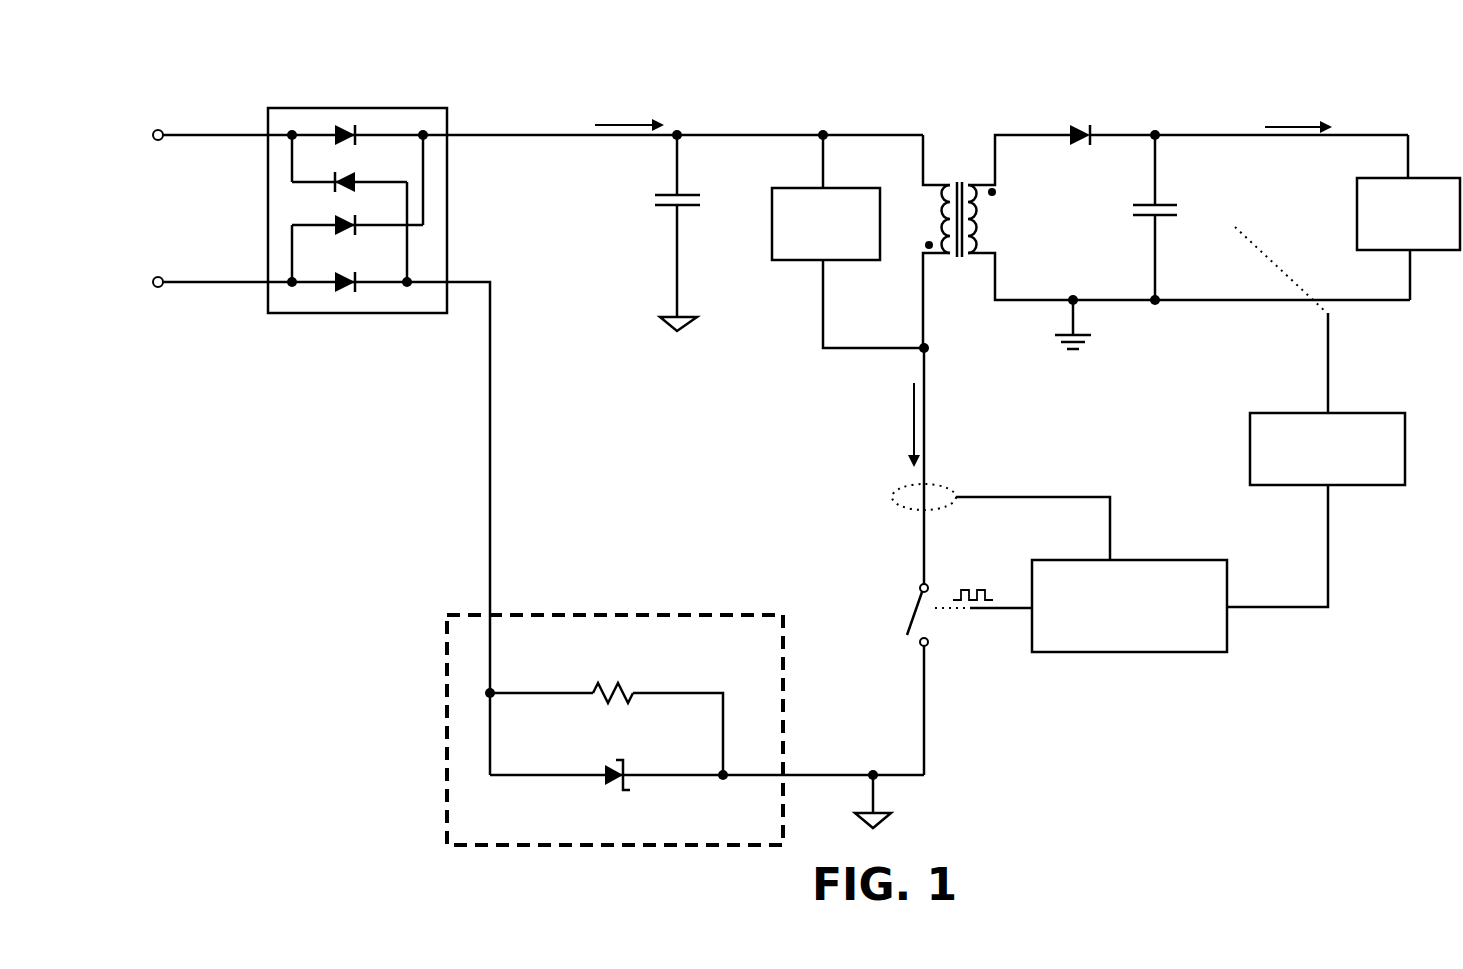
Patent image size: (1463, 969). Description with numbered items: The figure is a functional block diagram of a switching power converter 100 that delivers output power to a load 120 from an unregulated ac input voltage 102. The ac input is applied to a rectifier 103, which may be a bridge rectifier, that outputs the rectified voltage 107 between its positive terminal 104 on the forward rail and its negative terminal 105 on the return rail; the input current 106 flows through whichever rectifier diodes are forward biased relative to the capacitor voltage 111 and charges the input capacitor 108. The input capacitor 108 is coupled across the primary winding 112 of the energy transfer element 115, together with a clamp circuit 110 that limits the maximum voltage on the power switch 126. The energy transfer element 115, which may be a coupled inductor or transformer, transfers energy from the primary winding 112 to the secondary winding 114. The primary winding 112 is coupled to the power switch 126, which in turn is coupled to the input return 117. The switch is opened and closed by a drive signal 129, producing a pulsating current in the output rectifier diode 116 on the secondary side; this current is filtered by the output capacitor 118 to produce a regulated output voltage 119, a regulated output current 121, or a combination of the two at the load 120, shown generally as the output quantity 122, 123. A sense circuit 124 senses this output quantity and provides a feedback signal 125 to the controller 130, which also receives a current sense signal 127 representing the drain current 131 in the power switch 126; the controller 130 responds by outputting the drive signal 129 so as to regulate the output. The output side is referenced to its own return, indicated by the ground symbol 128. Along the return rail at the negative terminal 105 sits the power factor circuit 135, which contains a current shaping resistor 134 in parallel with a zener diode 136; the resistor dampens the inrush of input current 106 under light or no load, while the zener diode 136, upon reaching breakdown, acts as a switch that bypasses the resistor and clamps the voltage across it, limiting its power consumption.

The power converter 100 is at (1375, 59).
The ac input voltage 102 is at (140, 191).
The rectifier 103 is at (266, 133).
The positive terminal 104 is at (462, 135).
The negative terminal 105 is at (490, 284).
The input current 106 is at (628, 100).
The rectified voltage 107 is at (556, 181).
The input capacitor 108 is at (660, 212).
The clamp circuit 110 is at (838, 262).
The capacitor voltage 111 is at (753, 258).
The primary winding 112 is at (929, 241).
The secondary winding 114 is at (999, 197).
The energy transfer element 115 is at (958, 288).
The rectifier D1 116 is at (1070, 125).
The input return 117 is at (659, 331).
The output capacitor 118 is at (1111, 219).
The output voltage 119 is at (1207, 209).
The load 120 is at (1435, 179).
The output current 121 is at (1281, 111).
The output quantity 122 is at (1378, 348).
The output quantity 123 is at (1239, 278).
The sense circuit 124 is at (1239, 443).
The feedback signal 125 is at (1352, 550).
The power switch 126 is at (897, 623).
The current sense signal 127 is at (1086, 456).
The output return ground 128 is at (1100, 348).
The drive signal 129 is at (1035, 668).
The controller 130 is at (1175, 560).
The drain current 131 is at (879, 421).
The current shaping resistor 134 is at (638, 673).
The power factor circuit 135 is at (714, 611).
The zener diode 136 is at (642, 818).